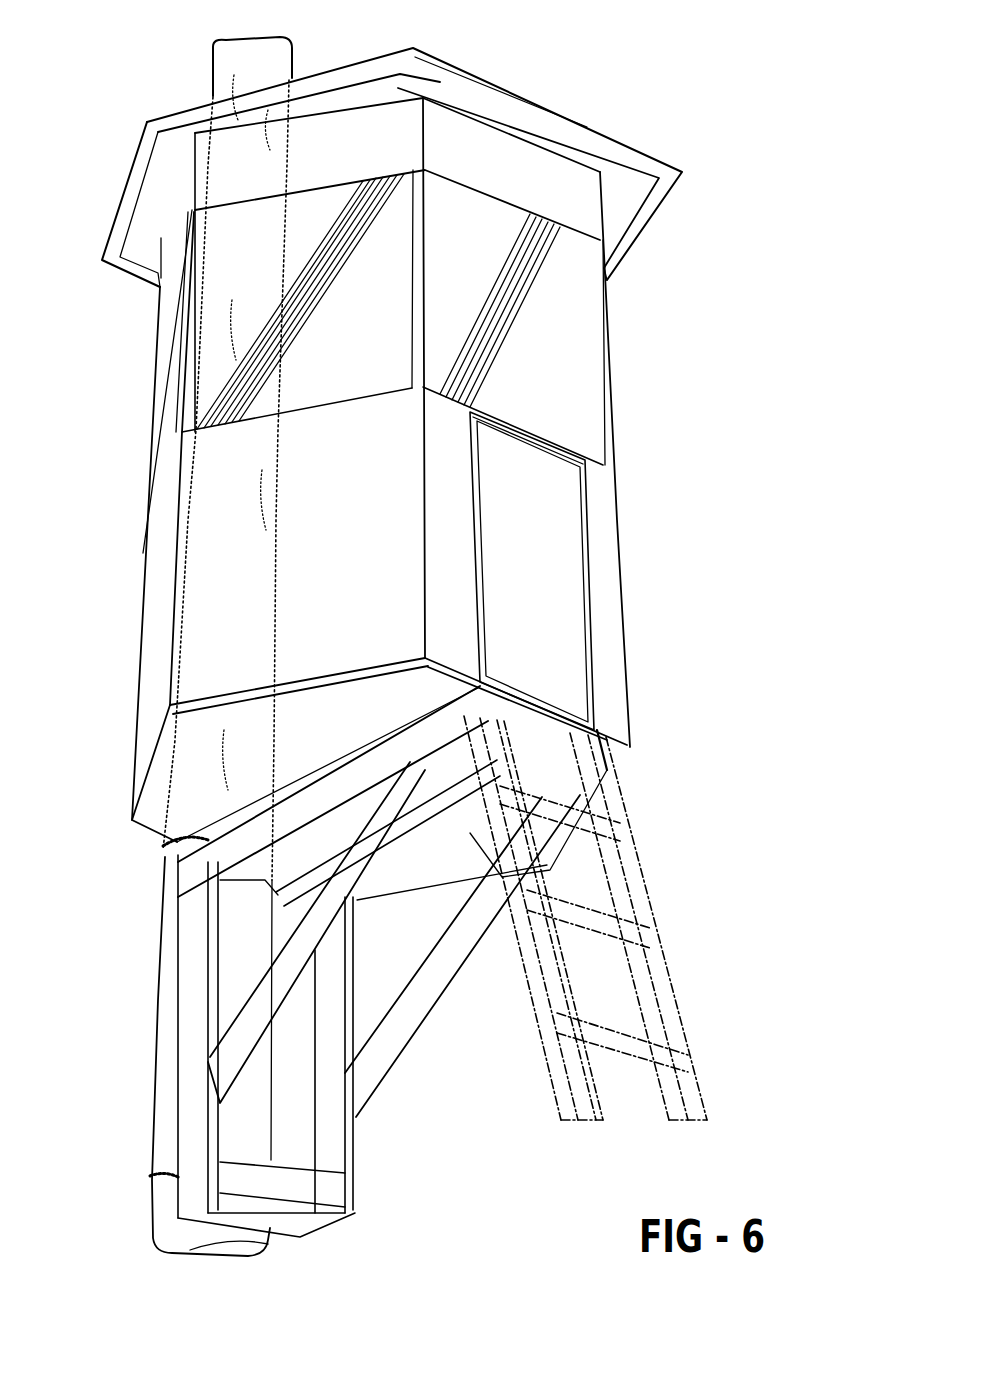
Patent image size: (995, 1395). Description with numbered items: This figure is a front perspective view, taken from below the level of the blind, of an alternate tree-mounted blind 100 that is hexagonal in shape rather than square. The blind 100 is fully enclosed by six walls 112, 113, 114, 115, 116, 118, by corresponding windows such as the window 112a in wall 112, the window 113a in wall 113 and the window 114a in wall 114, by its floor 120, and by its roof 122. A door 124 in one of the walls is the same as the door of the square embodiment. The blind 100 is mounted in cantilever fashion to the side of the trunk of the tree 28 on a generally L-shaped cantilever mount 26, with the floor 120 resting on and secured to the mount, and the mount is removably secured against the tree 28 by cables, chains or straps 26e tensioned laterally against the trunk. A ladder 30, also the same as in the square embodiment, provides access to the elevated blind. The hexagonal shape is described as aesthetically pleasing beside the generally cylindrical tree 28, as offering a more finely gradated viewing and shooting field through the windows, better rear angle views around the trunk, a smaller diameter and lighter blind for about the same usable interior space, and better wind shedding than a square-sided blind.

The tree-mounted blind 100 is at (387, 434).
The roof 122 is at (413, 55).
The tree 28 is at (222, 77).
The wall 113 is at (361, 482).
The window 113a is at (240, 285).
The wall 114 is at (111, 515).
The window 114a is at (165, 428).
The wall 112 is at (607, 515).
The window 112a is at (577, 353).
The door 124 is at (575, 647).
The floor 120 is at (160, 767).
The wall 118 is at (147, 837).
The wall 116 is at (393, 893).
The wall 115 is at (577, 850).
The cantilever mount 26 is at (395, 962).
The straps 26e is at (150, 1182).
The ladder 30 is at (660, 973).